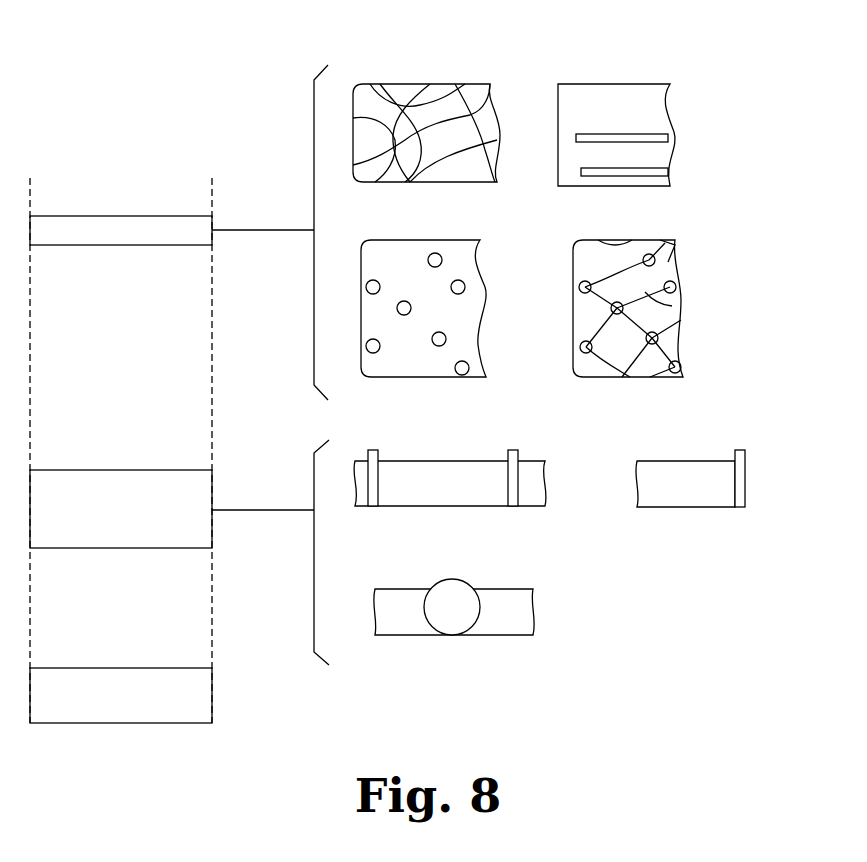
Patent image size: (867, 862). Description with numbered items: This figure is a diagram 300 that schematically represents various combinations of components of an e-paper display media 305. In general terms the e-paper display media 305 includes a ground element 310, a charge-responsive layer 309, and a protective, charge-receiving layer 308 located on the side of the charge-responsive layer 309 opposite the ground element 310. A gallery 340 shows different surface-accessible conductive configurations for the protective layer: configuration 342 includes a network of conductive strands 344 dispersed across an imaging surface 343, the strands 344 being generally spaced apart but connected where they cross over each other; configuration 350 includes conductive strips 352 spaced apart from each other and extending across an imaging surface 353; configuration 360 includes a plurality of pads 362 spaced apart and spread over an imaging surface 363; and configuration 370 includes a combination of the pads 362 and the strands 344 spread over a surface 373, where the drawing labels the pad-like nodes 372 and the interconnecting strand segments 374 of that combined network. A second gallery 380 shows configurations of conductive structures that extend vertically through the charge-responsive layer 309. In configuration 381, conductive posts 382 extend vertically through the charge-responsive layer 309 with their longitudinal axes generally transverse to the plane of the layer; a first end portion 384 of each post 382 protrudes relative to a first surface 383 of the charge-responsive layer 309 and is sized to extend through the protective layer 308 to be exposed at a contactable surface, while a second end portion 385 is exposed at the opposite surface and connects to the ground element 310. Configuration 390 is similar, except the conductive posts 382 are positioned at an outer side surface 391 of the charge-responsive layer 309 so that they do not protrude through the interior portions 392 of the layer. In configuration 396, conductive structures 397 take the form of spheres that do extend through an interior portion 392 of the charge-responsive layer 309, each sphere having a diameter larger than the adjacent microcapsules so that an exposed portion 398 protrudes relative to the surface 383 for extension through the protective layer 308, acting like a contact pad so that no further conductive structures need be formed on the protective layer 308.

The diagram 300 is at (95, 41).
The e-paper display media 305 is at (113, 168).
The protective, charge-receiving layer 308 is at (120, 246).
The charge-responsive layer 309 is at (140, 470).
The ground element 310 is at (112, 668).
The gallery 340 is at (312, 124).
The configuration 342 is at (432, 82).
The imaging surface 343 is at (469, 110).
The conductive strands 344 is at (457, 98).
The configuration 350 is at (630, 80).
The conductive strips 352 is at (652, 172).
The imaging surface 353 is at (588, 119).
The configuration 360 is at (397, 234).
The pads 362 is at (438, 254).
The imaging surface 363 is at (393, 291).
The configuration 370 is at (592, 236).
The network nodes 372 is at (664, 264).
The surface 373 is at (585, 274).
The network links 374 is at (672, 306).
The gallery 380 is at (312, 483).
The configuration 381 is at (433, 512).
The conductive posts 382 is at (378, 480).
The first surface 383 is at (478, 461).
The first end portion 384 is at (374, 450).
The second end portion 385 is at (370, 506).
The configuration 390 is at (702, 510).
The outer side surface 391 is at (748, 470).
The interior portion 392 is at (717, 472).
The configuration 396 is at (550, 623).
The conductive structures 397 is at (448, 622).
The exposed portion 398 is at (458, 580).